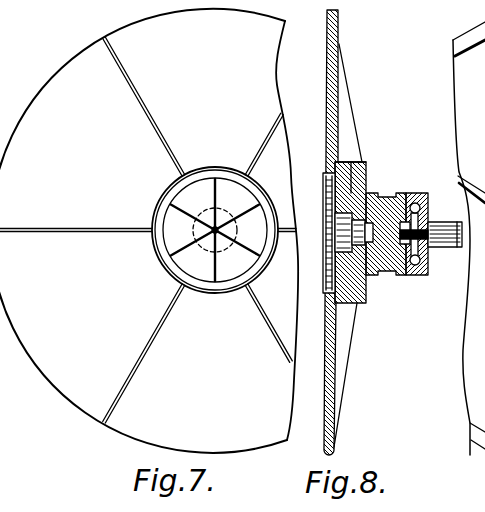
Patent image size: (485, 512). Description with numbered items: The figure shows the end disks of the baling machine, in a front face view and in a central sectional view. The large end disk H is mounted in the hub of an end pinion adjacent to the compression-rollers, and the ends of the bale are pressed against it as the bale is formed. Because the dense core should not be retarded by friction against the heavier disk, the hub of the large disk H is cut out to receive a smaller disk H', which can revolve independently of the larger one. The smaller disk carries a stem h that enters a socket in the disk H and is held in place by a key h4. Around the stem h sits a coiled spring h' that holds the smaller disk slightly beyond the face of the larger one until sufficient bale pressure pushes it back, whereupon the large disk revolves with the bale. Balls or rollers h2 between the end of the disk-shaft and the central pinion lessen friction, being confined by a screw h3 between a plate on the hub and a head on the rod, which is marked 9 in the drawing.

In FIG. 7, the end disk H is at (149, 231).
In FIG. 8, the smaller disk H' is at (317, 229).
In FIG. 8, the stem h is at (334, 232).
In FIG. 8, the coiled spring h' is at (381, 213).
In FIG. 8, the balls or rollers h2 is at (413, 200).
In FIG. 8, the screw h3 is at (430, 224).
In FIG. 8, the key h4 is at (362, 163).
In FIG. 8, the shaft 9 is at (461, 246).